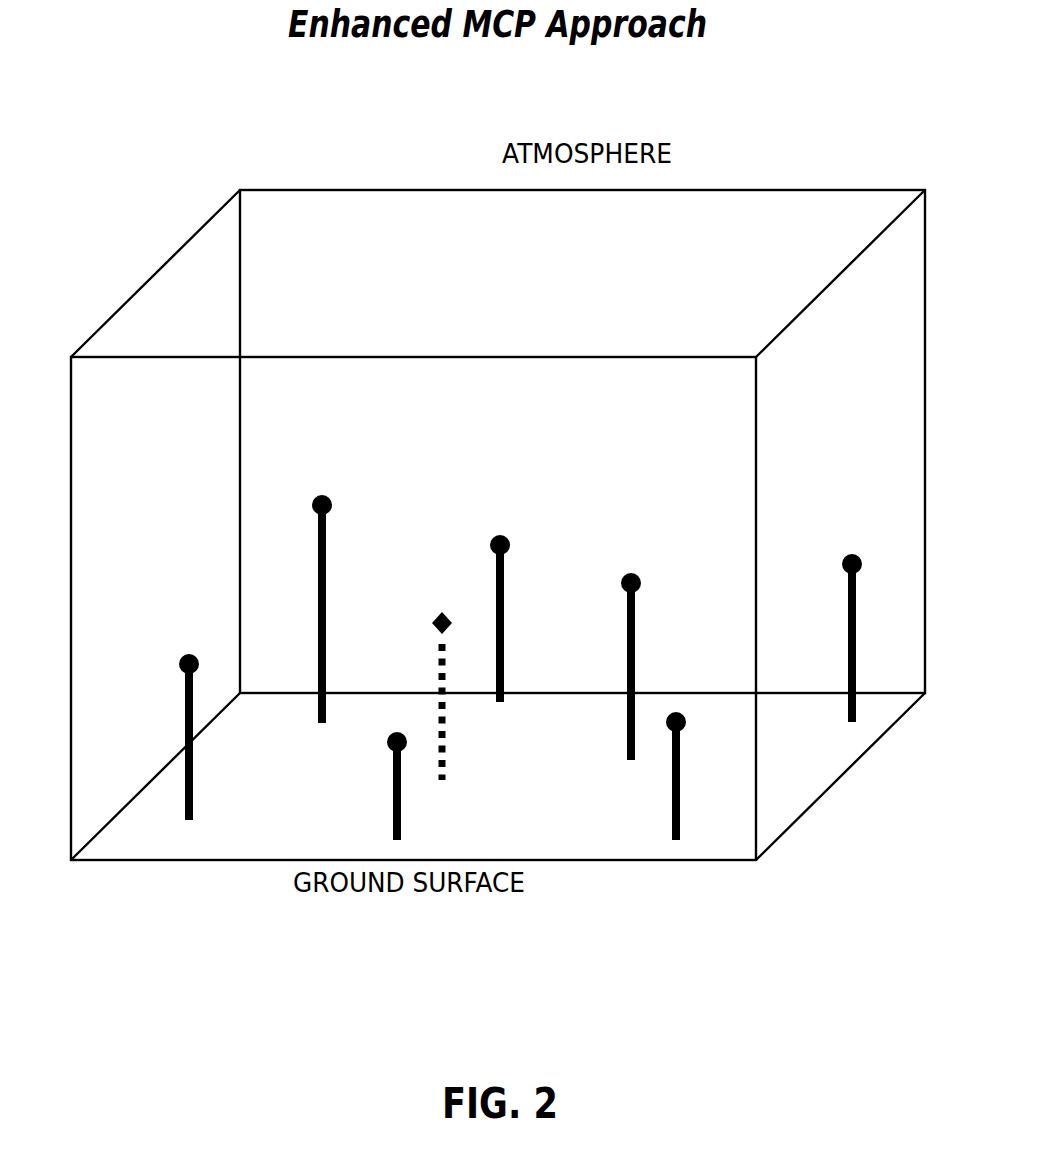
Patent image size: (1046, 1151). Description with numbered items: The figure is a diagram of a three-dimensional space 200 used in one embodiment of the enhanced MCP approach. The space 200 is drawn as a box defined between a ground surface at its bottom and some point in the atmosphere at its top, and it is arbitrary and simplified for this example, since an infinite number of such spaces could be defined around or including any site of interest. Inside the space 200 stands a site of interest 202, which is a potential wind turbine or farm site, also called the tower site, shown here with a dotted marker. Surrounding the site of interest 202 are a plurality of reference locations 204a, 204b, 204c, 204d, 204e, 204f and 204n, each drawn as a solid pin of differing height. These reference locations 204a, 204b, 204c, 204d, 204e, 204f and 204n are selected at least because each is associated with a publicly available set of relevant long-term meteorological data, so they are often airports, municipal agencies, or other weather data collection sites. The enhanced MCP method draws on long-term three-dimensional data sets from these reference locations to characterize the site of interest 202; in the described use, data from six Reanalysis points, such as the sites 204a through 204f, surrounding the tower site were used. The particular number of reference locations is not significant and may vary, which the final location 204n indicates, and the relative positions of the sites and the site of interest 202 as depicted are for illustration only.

The three-dimensional space 200 is at (737, 210).
The site of interest 202 is at (443, 743).
The reference location 204a is at (193, 788).
The reference location 204b is at (318, 669).
The reference location 204c is at (400, 808).
The reference location 204d is at (503, 643).
The reference location 204e is at (634, 672).
The reference location 204f is at (679, 759).
The reference location 204n is at (849, 647).